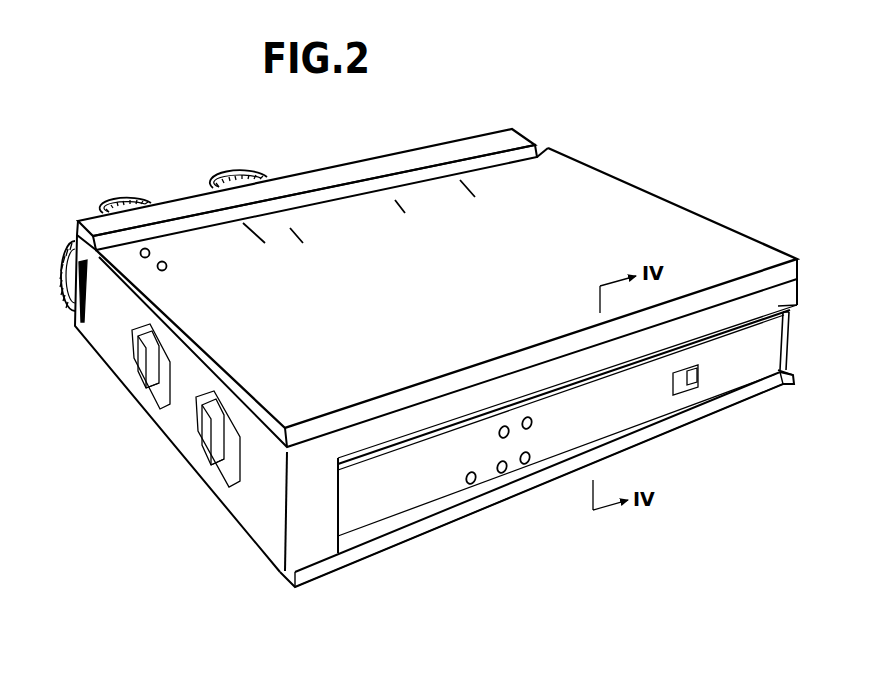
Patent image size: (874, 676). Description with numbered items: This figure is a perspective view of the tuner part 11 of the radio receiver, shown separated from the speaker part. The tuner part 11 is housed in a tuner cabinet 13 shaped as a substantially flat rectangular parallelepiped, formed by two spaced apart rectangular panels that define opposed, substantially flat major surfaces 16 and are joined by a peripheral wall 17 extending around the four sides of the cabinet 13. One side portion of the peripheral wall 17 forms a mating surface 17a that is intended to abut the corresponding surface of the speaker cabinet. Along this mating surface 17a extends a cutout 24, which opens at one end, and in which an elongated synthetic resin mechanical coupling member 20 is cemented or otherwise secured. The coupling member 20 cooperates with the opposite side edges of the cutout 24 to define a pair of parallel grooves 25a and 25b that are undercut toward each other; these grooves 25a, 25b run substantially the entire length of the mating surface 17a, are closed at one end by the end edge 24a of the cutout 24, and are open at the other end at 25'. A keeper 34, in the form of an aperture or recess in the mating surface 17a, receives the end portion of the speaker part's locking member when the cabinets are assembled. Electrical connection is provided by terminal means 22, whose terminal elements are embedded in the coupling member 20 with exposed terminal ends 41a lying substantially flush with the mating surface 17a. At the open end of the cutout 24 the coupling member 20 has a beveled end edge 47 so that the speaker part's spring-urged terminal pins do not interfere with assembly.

The tuner part 11 is at (722, 120).
The tuner cabinet 13 is at (688, 206).
The major surfaces 16 is at (611, 202).
The peripheral wall 17 is at (110, 352).
The mating surface 17a is at (713, 313).
The mechanical coupling member 20 is at (757, 353).
The terminal means 22 is at (480, 457).
The cutout 24 is at (633, 435).
The end edge 24a is at (340, 510).
The groove 25a is at (590, 372).
The groove 25b is at (707, 401).
The open ends of grooves 25' is at (822, 329).
The keeper 34 is at (699, 378).
The exposed terminal ends 41a is at (502, 473).
The beveled end edge 47 is at (790, 330).